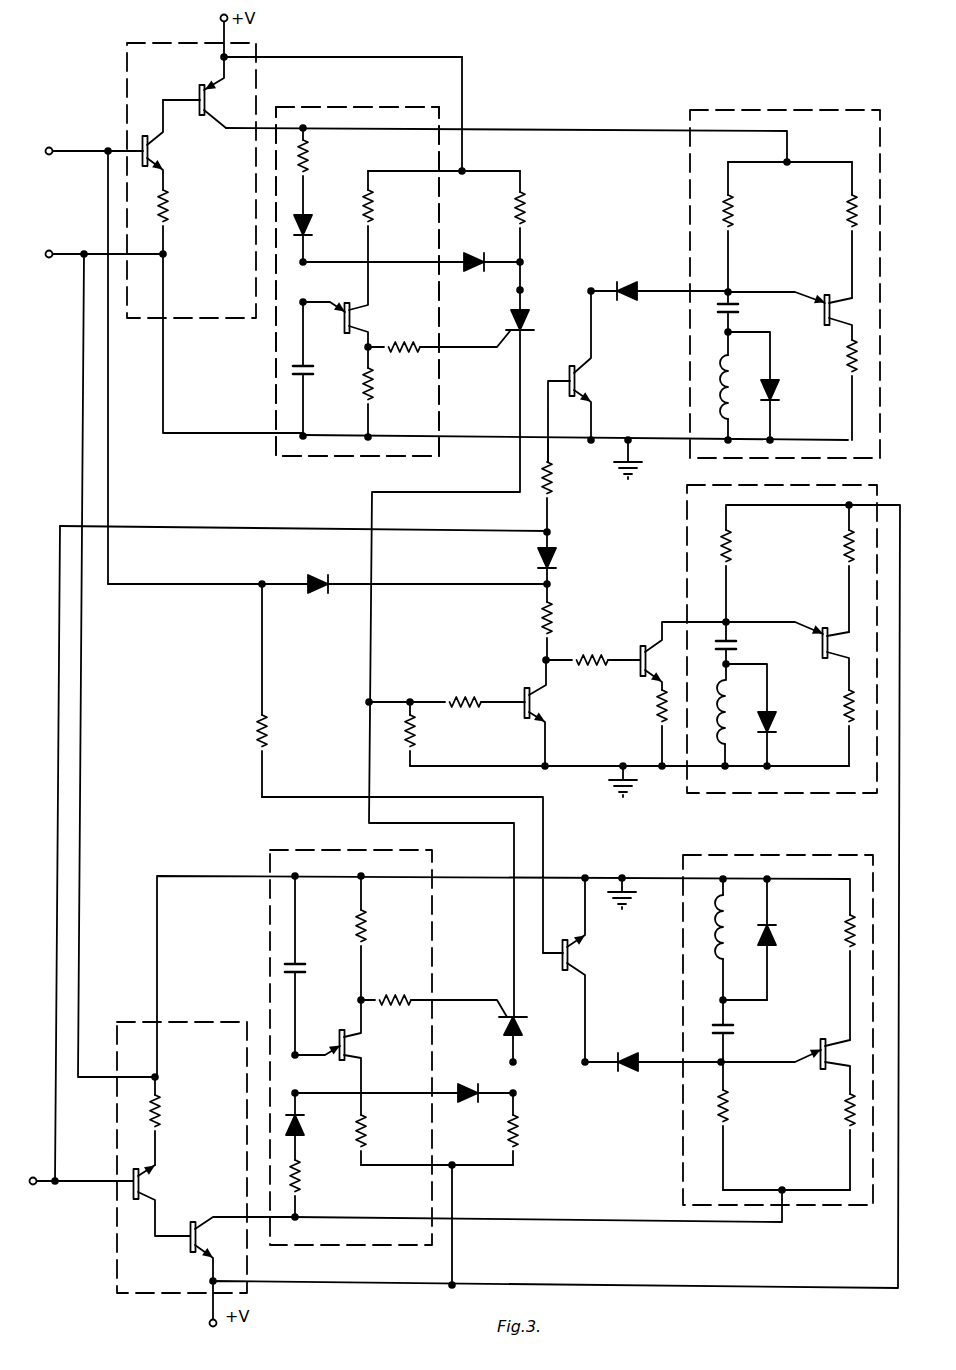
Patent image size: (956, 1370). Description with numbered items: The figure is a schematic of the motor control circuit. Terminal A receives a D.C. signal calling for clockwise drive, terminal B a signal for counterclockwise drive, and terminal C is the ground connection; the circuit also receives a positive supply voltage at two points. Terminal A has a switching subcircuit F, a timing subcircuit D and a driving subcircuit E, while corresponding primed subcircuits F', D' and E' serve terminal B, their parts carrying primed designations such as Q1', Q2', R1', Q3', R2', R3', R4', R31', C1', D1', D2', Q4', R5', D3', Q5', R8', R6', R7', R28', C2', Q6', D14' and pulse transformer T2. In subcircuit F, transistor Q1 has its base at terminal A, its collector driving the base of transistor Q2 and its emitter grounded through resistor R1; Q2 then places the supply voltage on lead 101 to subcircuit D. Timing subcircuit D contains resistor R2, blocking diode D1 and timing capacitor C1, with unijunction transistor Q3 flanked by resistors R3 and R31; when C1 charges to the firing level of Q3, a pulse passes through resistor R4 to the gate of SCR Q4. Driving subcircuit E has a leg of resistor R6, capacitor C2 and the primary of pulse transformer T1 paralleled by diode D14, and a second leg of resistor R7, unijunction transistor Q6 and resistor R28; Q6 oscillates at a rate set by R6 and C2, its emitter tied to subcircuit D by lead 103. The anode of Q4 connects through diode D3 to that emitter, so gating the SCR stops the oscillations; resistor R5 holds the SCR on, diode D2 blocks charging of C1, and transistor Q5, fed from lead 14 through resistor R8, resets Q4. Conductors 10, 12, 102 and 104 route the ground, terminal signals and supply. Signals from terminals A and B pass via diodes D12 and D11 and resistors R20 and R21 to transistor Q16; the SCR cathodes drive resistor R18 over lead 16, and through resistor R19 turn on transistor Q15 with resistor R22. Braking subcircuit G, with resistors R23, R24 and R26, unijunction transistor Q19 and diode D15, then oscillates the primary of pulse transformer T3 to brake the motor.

The conductor 10 is at (82, 420).
The lead 12 is at (108, 420).
The lead 14 is at (441, 530).
The lead 16 is at (370, 502).
The lead 101 is at (266, 122).
The conductor 102 is at (211, 433).
The lead 103 is at (660, 290).
The conductor 104 is at (463, 163).
The terminal A is at (92, 140).
The terminal B is at (81, 1170).
The terminal C is at (102, 243).
The timing subcircuit D is at (357, 301).
The driving subcircuit E is at (757, 284).
The switching subcircuit F is at (191, 199).
The subcircuit G is at (687, 518).
The timing subcircuit D' is at (351, 1060).
The driving subcircuit E' is at (753, 1030).
The switching subcircuit F' is at (149, 1158).
The transistor Q1 is at (145, 145).
The transistor Q2 is at (194, 92).
The unijunction transistor Q3 is at (335, 286).
The SCR Q4 is at (531, 310).
The transistor Q5 is at (580, 376).
The unijunction transistor Q6 is at (790, 303).
The transistor Q15 is at (527, 713).
The transistor Q16 is at (675, 656).
The unijunction transistor Q19 is at (787, 648).
The transistor Q1' is at (163, 1199).
The transistor Q2' is at (242, 1249).
The unijunction transistor Q3' is at (340, 1057).
The SCR Q4' is at (526, 1039).
The transistor Q5' is at (574, 970).
The unijunction transistor Q6' is at (785, 1054).
The resistor R1 is at (176, 222).
The resistor R2 is at (316, 171).
The resistor R3 is at (381, 196).
The resistor R4 is at (439, 338).
The resistor R5 is at (534, 230).
The resistor R6 is at (740, 227).
The resistor R7 is at (837, 230).
The resistor R8 is at (561, 486).
The resistor R18 is at (428, 734).
The resistor R19 is at (425, 692).
The resistor R20 is at (566, 622).
The resistor R21 is at (593, 671).
The resistor R22 is at (641, 728).
The resistor R23 is at (743, 576).
The resistor R24 is at (829, 568).
The resistor R26 is at (827, 720).
The resistor R28 is at (830, 390).
The resistor R31 is at (386, 391).
The resistor R1' is at (170, 1121).
The resistor R2' is at (309, 1188).
The resistor R3' is at (376, 1140).
The resistor R4' is at (434, 997).
The resistor R5' is at (529, 1129).
The resistor R6' is at (737, 1126).
The resistor R7' is at (832, 1142).
The resistor R8' is at (277, 690).
The resistor R28' is at (830, 975).
The resistor R31' is at (381, 938).
The timing capacitor C1 is at (314, 369).
The capacitor C2 is at (740, 312).
The timing capacitor C1' is at (309, 965).
The capacitor C2' is at (737, 1031).
The blocking diode D1 is at (317, 238).
The diode D2 is at (474, 253).
The diode D3 is at (626, 282).
The diode D11 is at (567, 558).
The diode D12 is at (320, 575).
The diode D14 is at (773, 386).
The diode D15 is at (770, 715).
The blocking diode D1' is at (309, 1126).
The diode D2' is at (467, 1084).
The diode D3' is at (628, 1052).
The diode D14' is at (788, 939).
The pulse transformer T1 is at (712, 386).
The pulse transformer T2 is at (706, 939).
The pulse transformer T3 is at (713, 694).